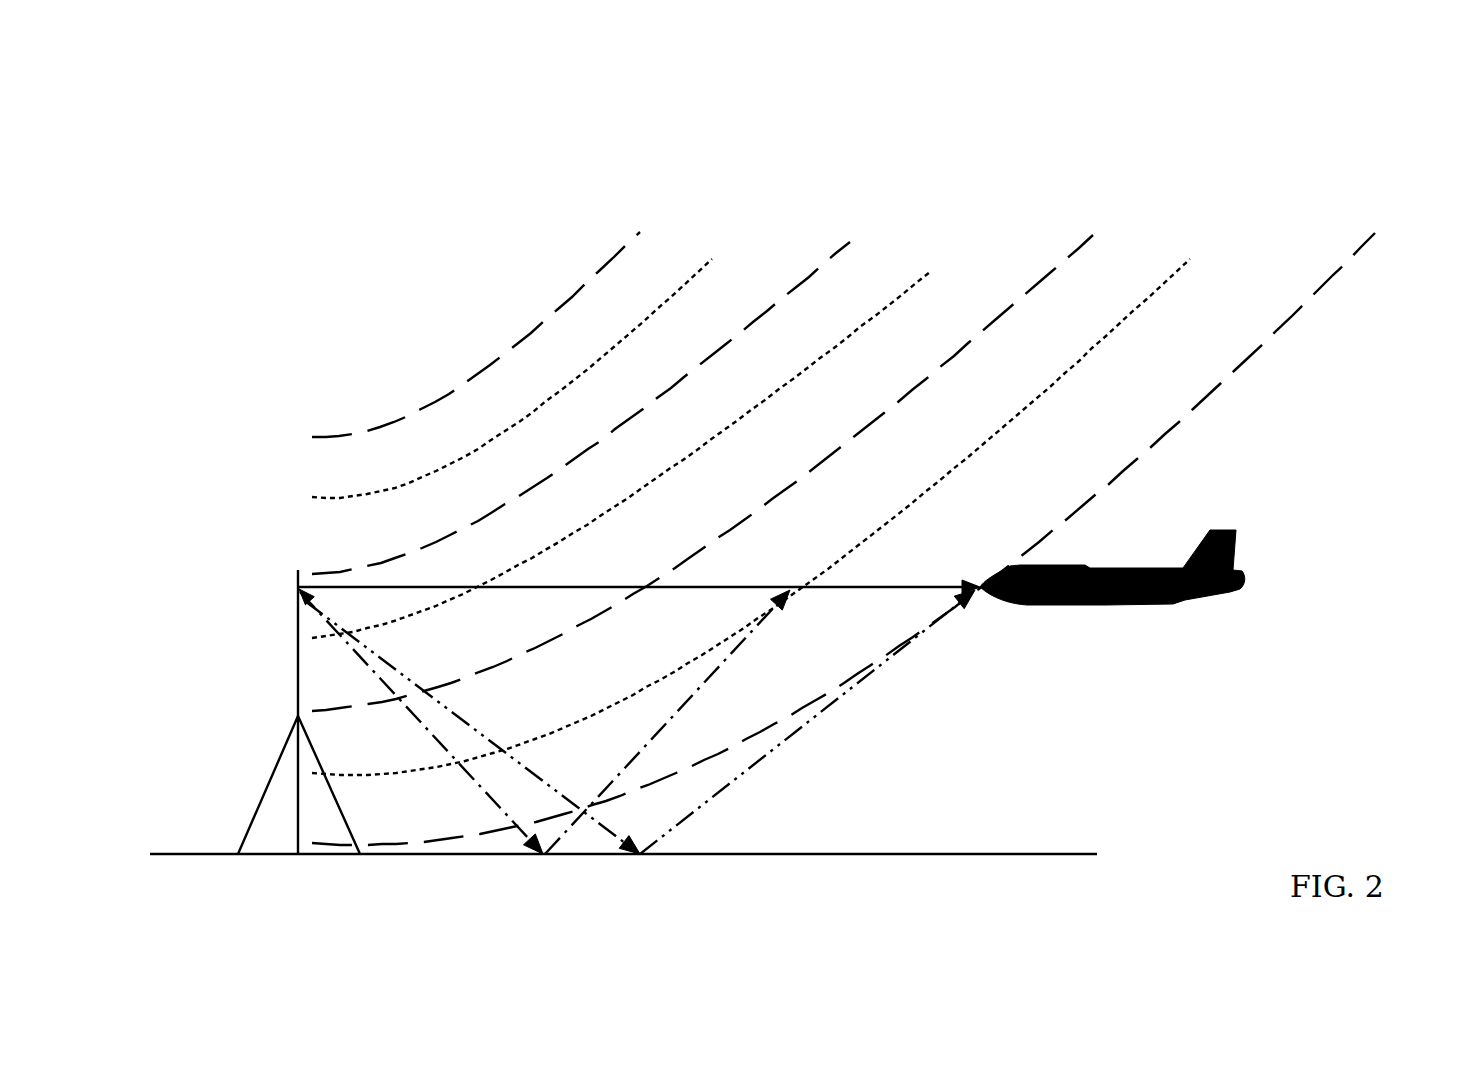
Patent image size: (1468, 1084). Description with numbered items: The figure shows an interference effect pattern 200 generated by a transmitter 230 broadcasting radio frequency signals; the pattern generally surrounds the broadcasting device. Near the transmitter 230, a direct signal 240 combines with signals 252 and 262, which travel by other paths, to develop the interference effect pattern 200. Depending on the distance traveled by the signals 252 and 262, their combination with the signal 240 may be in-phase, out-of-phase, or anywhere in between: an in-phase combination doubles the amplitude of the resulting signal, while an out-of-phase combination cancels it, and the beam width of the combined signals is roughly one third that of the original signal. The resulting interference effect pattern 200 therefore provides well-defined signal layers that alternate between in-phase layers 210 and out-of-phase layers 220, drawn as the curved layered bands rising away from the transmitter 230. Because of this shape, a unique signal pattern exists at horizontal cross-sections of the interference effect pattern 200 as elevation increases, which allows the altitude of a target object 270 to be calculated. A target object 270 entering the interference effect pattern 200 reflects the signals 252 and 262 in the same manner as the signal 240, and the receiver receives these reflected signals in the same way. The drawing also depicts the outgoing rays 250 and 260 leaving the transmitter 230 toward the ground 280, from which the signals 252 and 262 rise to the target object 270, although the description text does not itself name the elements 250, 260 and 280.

The interference effect pattern 200 is at (388, 284).
The in-phase layers 210 is at (650, 222).
The out-of-phase layers 220 is at (713, 258).
The transmitter 230 is at (298, 660).
The signal 240 is at (445, 585).
The ground-reflected ray from antenna 250 is at (423, 716).
The second ground-reflected ray from antenna 260 is at (473, 728).
The signal 252 is at (700, 687).
The signal 262 is at (777, 747).
The target object 270 is at (1240, 567).
The ground surface 280 is at (1098, 853).